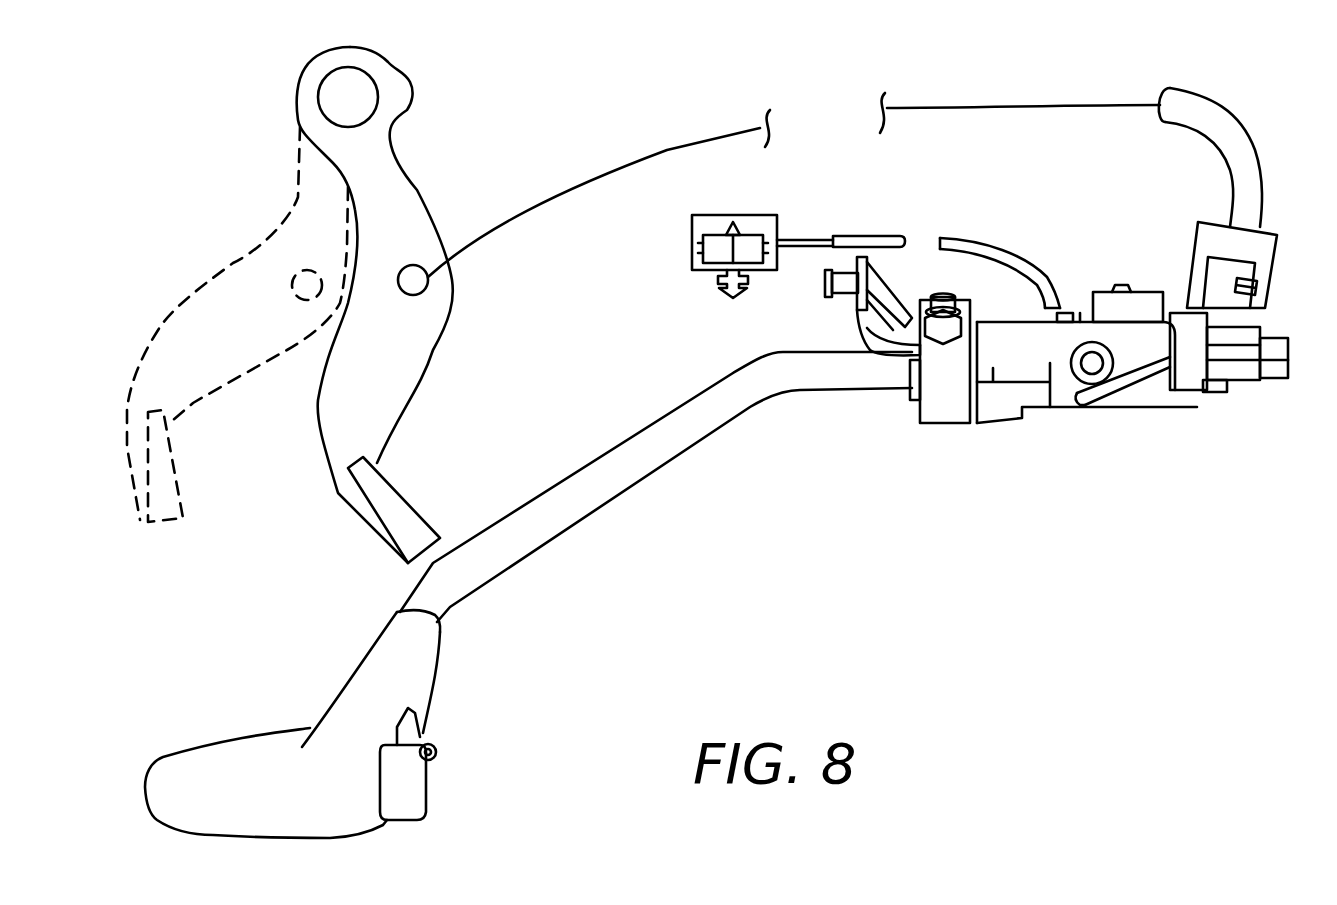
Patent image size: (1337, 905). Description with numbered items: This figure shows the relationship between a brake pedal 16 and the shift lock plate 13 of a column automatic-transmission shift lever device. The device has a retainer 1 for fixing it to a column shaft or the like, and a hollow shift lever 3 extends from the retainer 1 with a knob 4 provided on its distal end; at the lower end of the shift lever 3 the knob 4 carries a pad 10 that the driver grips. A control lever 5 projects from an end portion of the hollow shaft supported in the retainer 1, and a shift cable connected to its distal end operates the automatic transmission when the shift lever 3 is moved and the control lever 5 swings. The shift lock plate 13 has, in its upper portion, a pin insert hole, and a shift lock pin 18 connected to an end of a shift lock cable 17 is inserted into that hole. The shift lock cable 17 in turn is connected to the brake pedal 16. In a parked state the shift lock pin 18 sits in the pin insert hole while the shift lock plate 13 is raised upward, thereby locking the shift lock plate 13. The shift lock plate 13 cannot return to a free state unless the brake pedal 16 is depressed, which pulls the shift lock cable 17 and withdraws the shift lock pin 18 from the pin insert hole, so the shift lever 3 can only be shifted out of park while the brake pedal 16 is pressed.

The retainer 1 is at (1128, 393).
The shift lever 3 is at (680, 440).
The knob 4 is at (423, 658).
The control lever 5 is at (862, 328).
The lever pad 10 is at (415, 790).
The shift lock plate 13 is at (1247, 383).
The brake pedal 16 is at (403, 368).
The shift lock cable 17 is at (1002, 107).
The shift lock pin 18 is at (1227, 322).